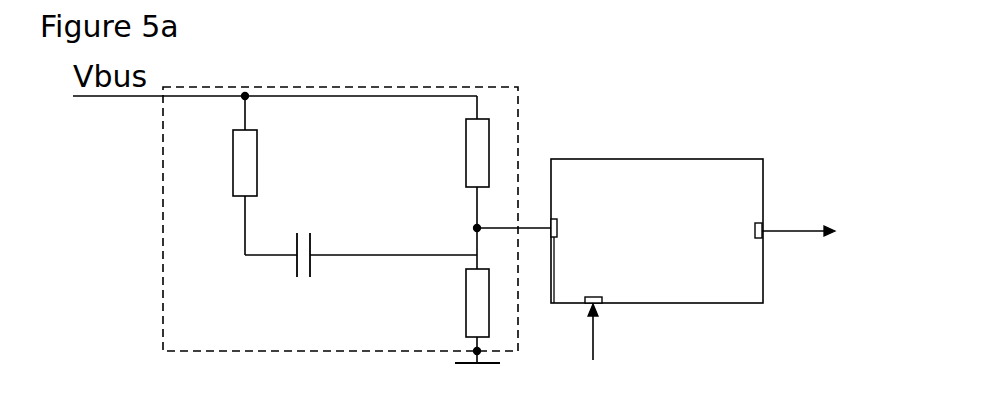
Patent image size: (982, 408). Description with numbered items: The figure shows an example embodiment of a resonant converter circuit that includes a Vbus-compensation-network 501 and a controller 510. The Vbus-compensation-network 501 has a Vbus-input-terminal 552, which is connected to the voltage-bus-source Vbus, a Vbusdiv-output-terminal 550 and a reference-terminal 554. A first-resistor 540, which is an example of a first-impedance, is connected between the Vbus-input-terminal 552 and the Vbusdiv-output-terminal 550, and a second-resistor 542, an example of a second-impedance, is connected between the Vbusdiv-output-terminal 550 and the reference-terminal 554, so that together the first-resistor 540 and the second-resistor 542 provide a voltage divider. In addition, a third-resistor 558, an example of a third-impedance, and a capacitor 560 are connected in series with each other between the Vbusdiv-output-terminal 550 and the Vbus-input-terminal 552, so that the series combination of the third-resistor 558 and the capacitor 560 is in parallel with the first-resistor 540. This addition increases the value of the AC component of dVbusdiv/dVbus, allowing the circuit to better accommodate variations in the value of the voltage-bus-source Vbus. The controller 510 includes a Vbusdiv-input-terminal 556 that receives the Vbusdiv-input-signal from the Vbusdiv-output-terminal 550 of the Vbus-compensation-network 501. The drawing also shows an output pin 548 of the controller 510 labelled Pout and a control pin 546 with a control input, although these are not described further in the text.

The Vbus-compensation-network 501 is at (163, 140).
The Vbus-input-terminal 552 is at (246, 94).
The third-resistor 558 is at (233, 185).
The capacitor 560 is at (310, 263).
The first-resistor 540 is at (489, 131).
The Vbusdiv-output-terminal 550 is at (479, 227).
The second-resistor 542 is at (489, 305).
The reference-terminal 554 is at (473, 352).
The controller 510 is at (712, 158).
The Vbusdiv-input-terminal 556 is at (553, 303).
The Pout output pin 548 is at (755, 228).
The control input pin 546 is at (602, 300).